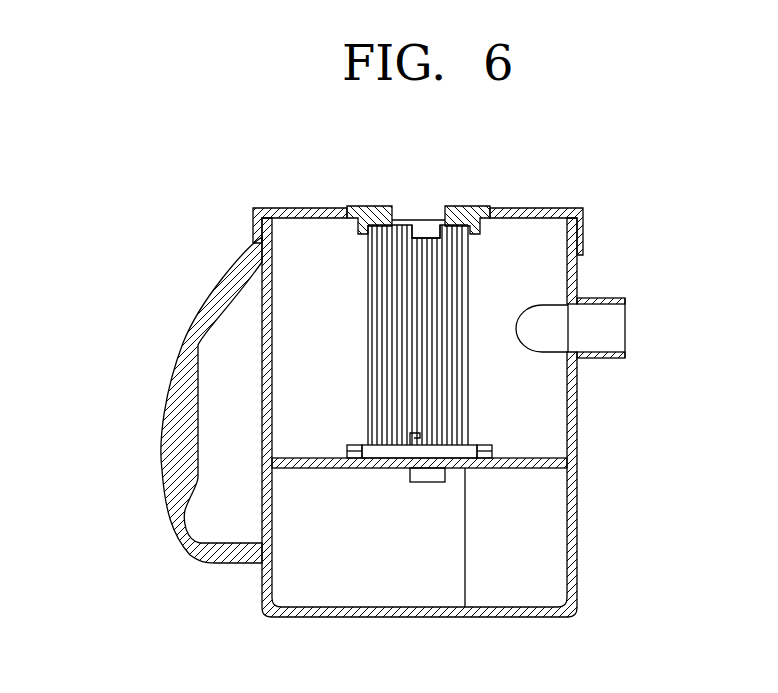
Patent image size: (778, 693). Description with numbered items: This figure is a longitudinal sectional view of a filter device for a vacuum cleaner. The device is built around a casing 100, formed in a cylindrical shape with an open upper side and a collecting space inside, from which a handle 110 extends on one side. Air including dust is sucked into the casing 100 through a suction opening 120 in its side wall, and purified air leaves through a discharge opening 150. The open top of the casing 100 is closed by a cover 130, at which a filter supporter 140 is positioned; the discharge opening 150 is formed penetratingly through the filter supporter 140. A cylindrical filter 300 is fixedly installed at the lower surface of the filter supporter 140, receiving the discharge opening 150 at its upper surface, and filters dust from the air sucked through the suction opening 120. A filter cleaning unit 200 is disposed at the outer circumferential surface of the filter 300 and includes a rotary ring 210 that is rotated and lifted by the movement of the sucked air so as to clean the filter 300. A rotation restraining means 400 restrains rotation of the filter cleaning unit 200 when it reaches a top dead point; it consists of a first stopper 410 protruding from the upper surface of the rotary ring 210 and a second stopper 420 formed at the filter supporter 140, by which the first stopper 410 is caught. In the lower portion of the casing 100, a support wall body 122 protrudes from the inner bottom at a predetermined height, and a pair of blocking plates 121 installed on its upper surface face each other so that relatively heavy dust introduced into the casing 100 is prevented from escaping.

The casing 100 is at (590, 237).
The handle 110 is at (163, 405).
The suction opening 120 is at (618, 327).
The blocking plates 121 is at (525, 466).
The support wall body 122 is at (445, 566).
The cover 130 is at (305, 208).
The filter supporter 140 is at (468, 208).
The discharge opening 150 is at (405, 218).
The filter cleaning unit 200 is at (521, 419).
The rotary ring 210 is at (450, 448).
The filter 300 is at (442, 235).
The rotation restraining means 400 is at (124, 246).
The first stopper 410 is at (412, 435).
The second stopper 420 is at (425, 233).